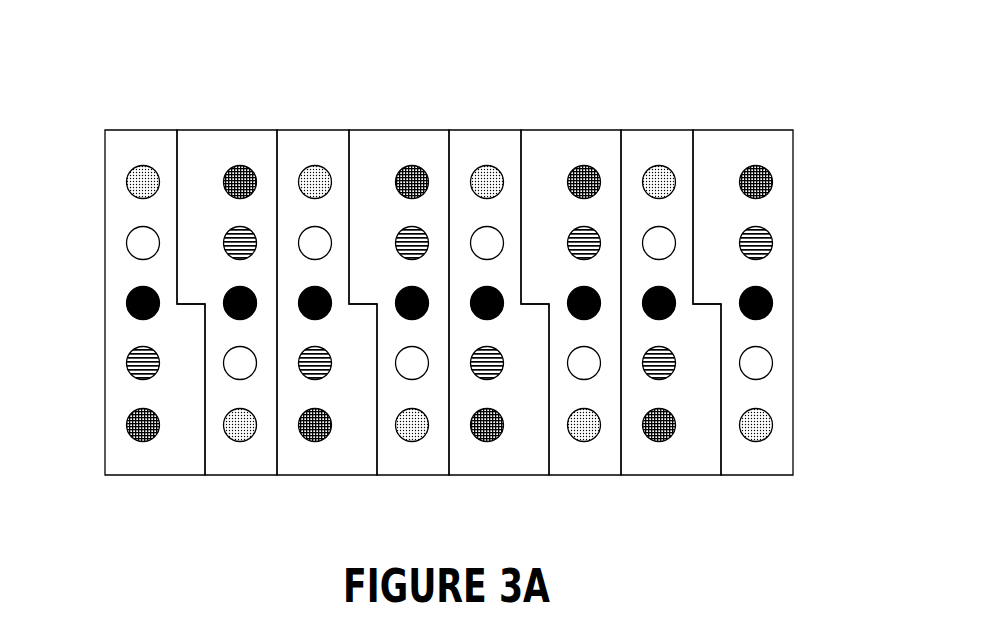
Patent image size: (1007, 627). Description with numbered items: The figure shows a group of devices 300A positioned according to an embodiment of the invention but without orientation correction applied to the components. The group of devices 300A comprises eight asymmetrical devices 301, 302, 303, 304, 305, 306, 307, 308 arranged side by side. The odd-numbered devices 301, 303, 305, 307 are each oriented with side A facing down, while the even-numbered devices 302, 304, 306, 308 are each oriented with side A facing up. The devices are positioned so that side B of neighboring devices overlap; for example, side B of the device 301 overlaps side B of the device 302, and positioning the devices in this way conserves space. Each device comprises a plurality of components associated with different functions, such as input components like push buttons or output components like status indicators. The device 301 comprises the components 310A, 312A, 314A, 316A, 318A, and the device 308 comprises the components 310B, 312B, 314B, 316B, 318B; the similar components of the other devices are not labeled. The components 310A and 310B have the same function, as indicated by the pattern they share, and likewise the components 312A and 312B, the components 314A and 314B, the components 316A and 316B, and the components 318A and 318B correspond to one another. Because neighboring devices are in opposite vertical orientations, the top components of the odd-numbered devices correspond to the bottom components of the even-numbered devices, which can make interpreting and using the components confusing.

The group of devices 300A is at (275, 70).
The device 301 is at (162, 476).
The device 302 is at (250, 476).
The device 303 is at (330, 476).
The device 304 is at (420, 476).
The device 305 is at (503, 476).
The device 306 is at (592, 476).
The device 307 is at (675, 476).
The device 308 is at (767, 476).
The component 310A is at (127, 182).
The component 312A is at (127, 243).
The component 314A is at (127, 303).
The component 316A is at (127, 363).
The component 318A is at (127, 425).
The component 310B is at (772, 421).
The component 312B is at (772, 359).
The component 314B is at (772, 299).
The component 316B is at (772, 239).
The component 318B is at (772, 178).